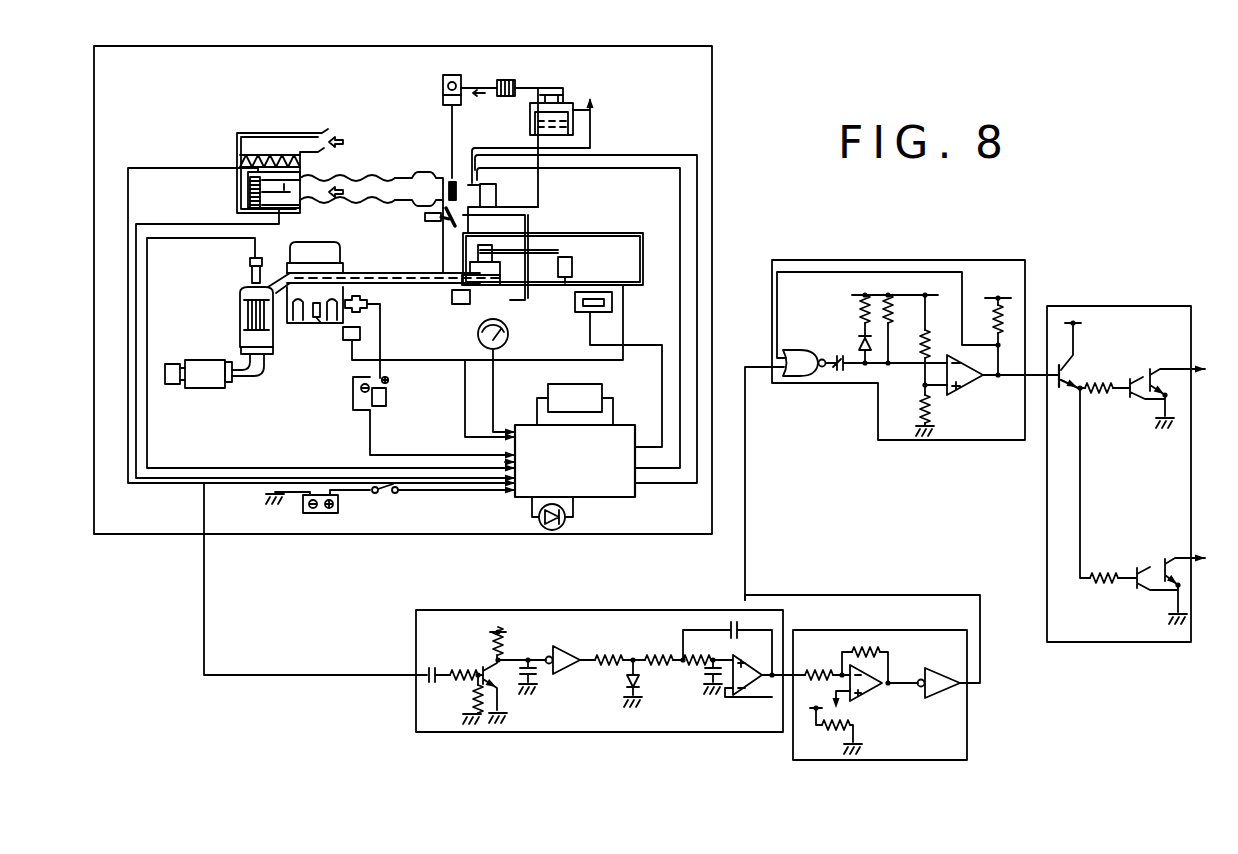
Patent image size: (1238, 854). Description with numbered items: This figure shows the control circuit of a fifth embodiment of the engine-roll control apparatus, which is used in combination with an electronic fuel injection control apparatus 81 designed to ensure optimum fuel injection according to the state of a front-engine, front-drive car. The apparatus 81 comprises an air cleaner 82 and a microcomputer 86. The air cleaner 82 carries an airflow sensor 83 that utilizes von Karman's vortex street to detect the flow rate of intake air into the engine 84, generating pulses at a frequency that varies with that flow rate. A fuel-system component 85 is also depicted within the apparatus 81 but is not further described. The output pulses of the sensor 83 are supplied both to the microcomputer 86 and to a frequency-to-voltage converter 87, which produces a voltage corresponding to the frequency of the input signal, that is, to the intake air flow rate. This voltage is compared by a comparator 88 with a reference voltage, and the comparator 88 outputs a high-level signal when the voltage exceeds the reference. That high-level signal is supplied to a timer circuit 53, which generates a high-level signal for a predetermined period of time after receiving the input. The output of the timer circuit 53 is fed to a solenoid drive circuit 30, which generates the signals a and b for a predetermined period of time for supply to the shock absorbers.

The solenoid drive circuit 30 is at (1078, 643).
The timer circuit 53 is at (990, 441).
The electronic fuel injection control apparatus 81 is at (141, 536).
The air cleaner 82 is at (272, 141).
The airflow sensor 83 is at (245, 193).
The engine 84 is at (317, 240).
The fuel tank 85 is at (580, 137).
The microcomputer 86 is at (600, 499).
The frequency-to-voltage converter 87 is at (415, 711).
The comparator 88 is at (968, 733).